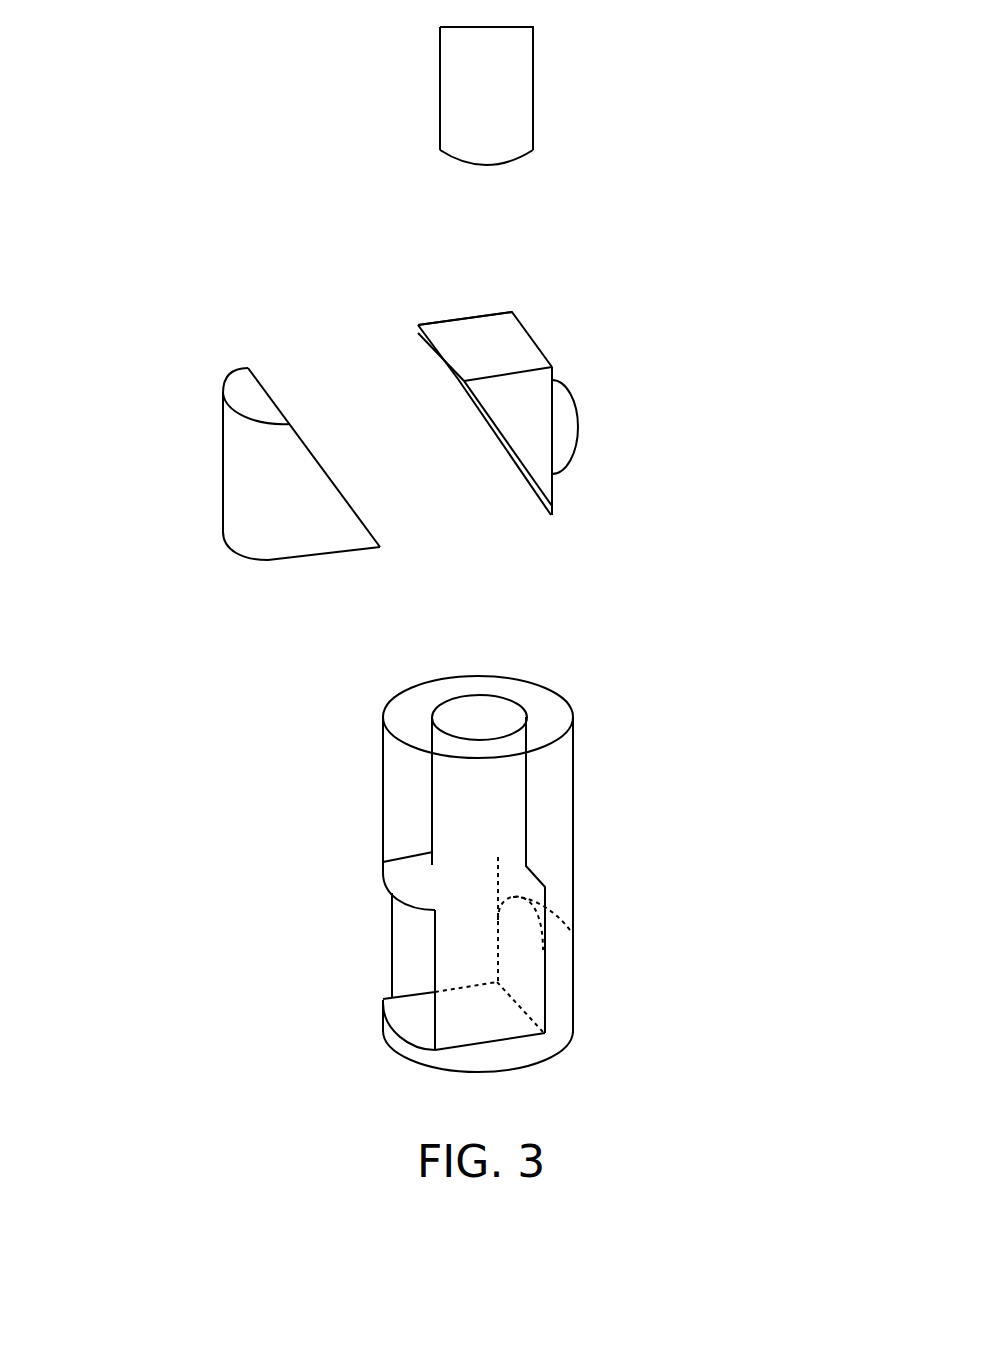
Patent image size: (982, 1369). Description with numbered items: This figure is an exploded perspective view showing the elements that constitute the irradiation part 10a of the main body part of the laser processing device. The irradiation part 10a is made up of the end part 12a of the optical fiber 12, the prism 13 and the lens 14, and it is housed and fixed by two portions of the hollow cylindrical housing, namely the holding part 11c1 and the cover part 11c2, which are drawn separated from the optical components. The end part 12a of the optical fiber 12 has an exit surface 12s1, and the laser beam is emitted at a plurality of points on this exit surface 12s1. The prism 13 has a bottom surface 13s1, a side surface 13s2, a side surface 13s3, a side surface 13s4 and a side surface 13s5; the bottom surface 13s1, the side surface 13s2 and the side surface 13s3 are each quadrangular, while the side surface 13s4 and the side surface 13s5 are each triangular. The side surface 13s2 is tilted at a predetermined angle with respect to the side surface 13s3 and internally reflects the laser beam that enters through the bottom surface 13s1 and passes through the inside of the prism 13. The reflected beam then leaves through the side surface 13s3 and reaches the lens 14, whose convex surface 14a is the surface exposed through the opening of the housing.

The irradiation part 10a is at (710, 95).
The optical fiber 12 is at (517, 76).
The end part of the optical fiber 12a is at (437, 112).
The exit surface 12s1 is at (497, 167).
The prism 13 is at (553, 366).
The bottom surface 13s1 is at (500, 337).
The side surface 13s2 is at (463, 398).
The side surface 13s3 is at (557, 487).
The side surface 13s4 is at (518, 430).
The side surface 13s5 is at (448, 318).
The lens 14 is at (576, 450).
The convex surface 14a is at (580, 427).
The holding part 11c1 is at (575, 796).
The cover part 11c2 is at (240, 478).